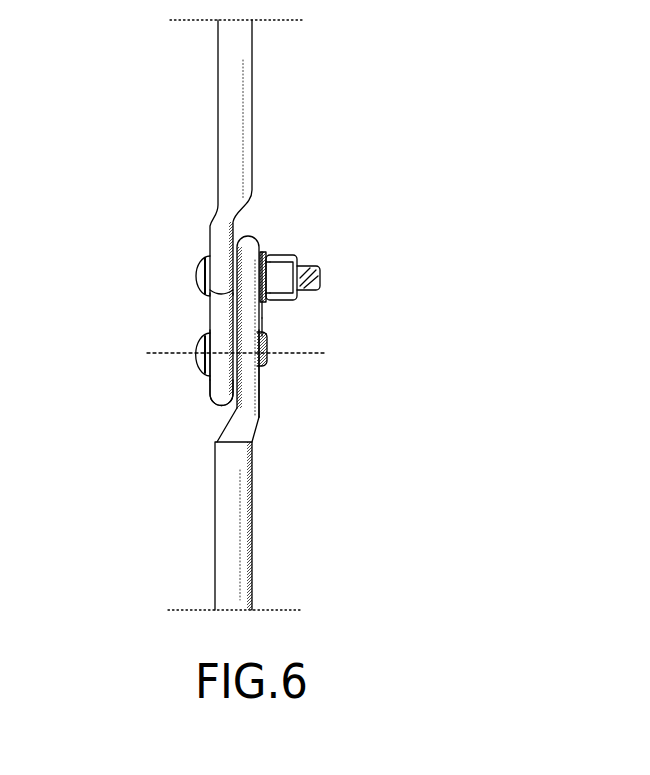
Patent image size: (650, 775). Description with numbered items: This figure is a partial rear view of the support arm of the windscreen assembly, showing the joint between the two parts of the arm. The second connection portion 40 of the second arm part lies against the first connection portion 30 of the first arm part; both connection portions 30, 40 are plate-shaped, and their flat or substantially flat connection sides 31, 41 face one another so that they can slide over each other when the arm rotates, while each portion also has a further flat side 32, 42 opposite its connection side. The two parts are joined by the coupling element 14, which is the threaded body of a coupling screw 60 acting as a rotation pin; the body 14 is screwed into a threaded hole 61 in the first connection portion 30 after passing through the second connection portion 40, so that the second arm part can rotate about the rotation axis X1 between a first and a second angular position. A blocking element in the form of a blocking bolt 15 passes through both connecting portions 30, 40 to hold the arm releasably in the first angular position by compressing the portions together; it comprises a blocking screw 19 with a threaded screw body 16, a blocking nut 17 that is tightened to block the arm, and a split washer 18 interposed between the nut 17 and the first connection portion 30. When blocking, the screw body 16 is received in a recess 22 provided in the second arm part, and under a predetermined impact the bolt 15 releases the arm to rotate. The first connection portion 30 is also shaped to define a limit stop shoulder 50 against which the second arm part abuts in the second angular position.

The coupling element 14 is at (260, 380).
The blocking bolt 15 is at (182, 272).
The threaded screw body 16 is at (322, 275).
The blocking nut 17 is at (292, 257).
The split washer 18 is at (263, 252).
The blocking screw 19 is at (200, 287).
The recess 22 is at (210, 313).
The first connection portion 30 is at (255, 418).
The first connection side 31 is at (258, 335).
The further flat side 32 is at (258, 317).
The second connection portion 40 is at (207, 243).
The second connection side 41 is at (228, 405).
The further flat side 42 is at (207, 384).
The limit stop shoulder 50 is at (222, 432).
The coupling screw 60 is at (178, 368).
The threaded hole 61 is at (267, 353).
The rotation axis X1 is at (313, 353).